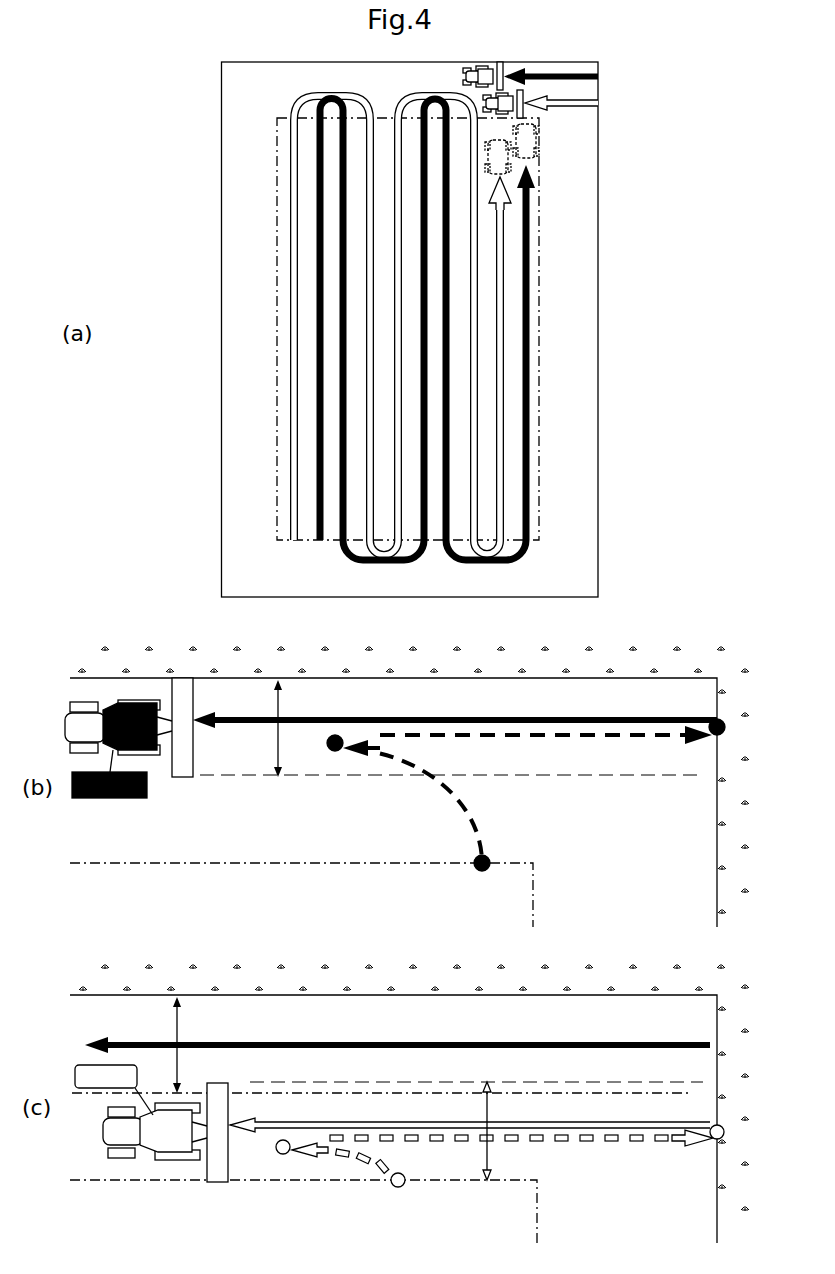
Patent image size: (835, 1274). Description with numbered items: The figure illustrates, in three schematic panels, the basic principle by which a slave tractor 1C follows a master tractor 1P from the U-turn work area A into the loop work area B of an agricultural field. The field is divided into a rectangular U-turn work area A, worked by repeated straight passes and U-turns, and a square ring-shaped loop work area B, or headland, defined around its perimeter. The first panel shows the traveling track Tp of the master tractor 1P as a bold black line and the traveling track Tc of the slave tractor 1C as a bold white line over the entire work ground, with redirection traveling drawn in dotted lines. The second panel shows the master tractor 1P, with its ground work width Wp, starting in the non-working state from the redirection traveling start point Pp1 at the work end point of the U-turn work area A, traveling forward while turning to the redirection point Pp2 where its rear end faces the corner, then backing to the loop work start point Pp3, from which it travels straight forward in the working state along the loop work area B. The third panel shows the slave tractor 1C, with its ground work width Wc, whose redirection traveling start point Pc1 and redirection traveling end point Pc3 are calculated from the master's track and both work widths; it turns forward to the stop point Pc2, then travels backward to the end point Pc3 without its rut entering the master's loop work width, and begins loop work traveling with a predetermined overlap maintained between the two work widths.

The U-turn work area A is at (385, 257).
The loop work area B is at (253, 432).
The traveling track of the master tractor Tp is at (530, 216).
The traveling track of the slave tractor Tc is at (502, 270).
The master tractor 1P is at (108, 703).
The slave tractor 1C is at (148, 1150).
The ground work width of the master tractor Wp is at (209, 886).
The ground work width of the slave tractor Wc is at (505, 1131).
The redirection traveling start point Pp1 is at (480, 871).
The redirection point Pp2 is at (332, 752).
The loop work start point Pp3 is at (725, 727).
The redirection traveling start point Pc1 is at (396, 1188).
The stop point Pc2 is at (280, 1154).
The redirection traveling end point Pc3 is at (725, 1132).